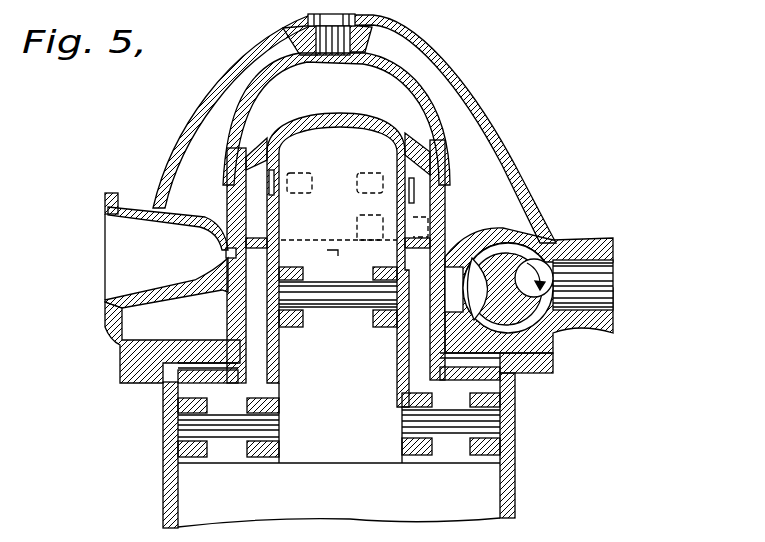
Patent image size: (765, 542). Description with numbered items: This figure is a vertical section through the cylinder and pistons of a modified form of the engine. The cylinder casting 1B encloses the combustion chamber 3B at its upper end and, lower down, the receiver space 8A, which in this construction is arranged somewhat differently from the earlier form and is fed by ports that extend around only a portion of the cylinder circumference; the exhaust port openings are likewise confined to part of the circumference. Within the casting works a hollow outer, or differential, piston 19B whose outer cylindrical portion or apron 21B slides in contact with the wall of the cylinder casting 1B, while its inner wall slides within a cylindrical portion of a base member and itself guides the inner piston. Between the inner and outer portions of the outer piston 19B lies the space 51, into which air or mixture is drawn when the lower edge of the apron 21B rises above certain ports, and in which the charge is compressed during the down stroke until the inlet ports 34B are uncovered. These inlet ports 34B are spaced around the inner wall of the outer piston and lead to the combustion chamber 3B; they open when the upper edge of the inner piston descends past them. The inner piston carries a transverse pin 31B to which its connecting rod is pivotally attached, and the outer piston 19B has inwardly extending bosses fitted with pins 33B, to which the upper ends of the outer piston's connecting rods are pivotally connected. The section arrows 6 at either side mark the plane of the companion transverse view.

The cylinder casting 1B is at (447, 131).
The combustion chamber 3B is at (422, 92).
The outer piston 19B is at (411, 150).
The space 51 is at (243, 157).
The inlet ports 34B is at (456, 180).
The outer cylindrical portion 21B is at (444, 203).
The transverse pin 31B is at (337, 292).
The receiver space 8A is at (457, 303).
The pins 33B is at (223, 440).
The section line 6 is at (55, 213).